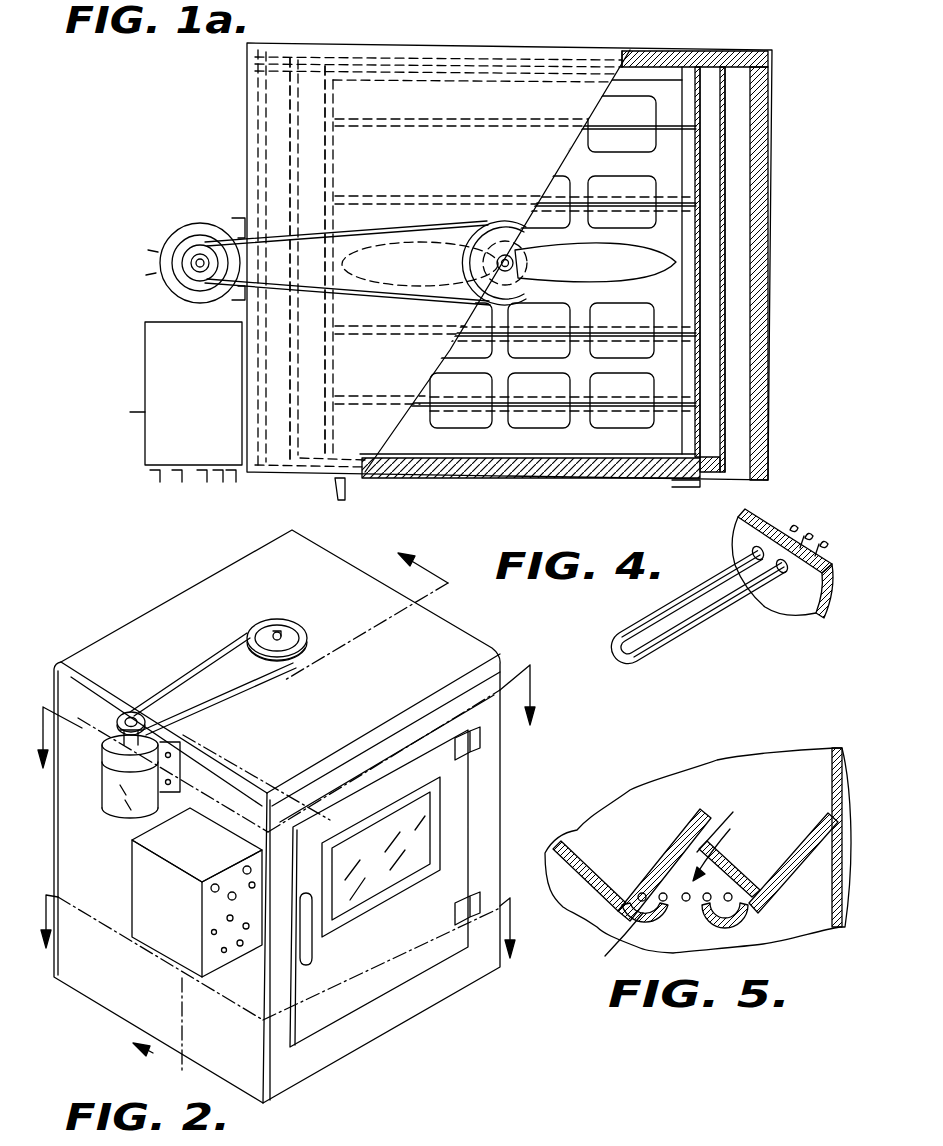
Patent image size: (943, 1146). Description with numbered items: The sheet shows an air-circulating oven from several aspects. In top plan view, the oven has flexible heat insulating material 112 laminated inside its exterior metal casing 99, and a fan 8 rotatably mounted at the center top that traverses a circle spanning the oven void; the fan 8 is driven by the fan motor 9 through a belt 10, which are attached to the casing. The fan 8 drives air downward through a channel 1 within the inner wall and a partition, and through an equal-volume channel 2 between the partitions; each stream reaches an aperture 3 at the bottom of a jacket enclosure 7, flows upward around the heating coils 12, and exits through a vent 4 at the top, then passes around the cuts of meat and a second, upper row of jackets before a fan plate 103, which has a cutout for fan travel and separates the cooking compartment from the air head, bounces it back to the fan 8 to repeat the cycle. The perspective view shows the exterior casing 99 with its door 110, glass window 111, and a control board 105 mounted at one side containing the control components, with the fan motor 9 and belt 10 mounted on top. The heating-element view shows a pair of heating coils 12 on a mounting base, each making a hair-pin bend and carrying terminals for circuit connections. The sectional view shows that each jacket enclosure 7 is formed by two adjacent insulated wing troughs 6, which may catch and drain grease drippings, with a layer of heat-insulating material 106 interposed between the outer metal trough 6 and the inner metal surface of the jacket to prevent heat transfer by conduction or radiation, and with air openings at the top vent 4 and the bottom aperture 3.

In FIG. 1A, the channel 1 is at (285, 75).
In FIG. 1A, the channel 2 is at (312, 78).
In FIG. 2, the aperture 3 is at (282, 934).
In FIG. 5, the aperture 3 is at (682, 913).
In FIG. 5, the vent 4 is at (723, 821).
In FIG. 2, the wing trough 6 is at (292, 729).
In FIG. 5, the wing trough 6 is at (587, 860).
In FIG. 2, the jacket enclosure 7 is at (290, 818).
In FIG. 5, the jacket enclosure 7 is at (721, 849).
In FIG. 1A, the fan 8 is at (665, 250).
In FIG. 1A, the motor 9 is at (178, 232).
In FIG. 2, the motor 9 is at (100, 780).
In FIG. 1A, the drive belt 10 is at (212, 238).
In FIG. 2, the drive belt 10 is at (196, 680).
In FIG. 4, the heating coils 12 is at (694, 575).
In FIG. 5, the heating coils 12 is at (750, 853).
In FIG. 2, the exterior metal casing 99 is at (460, 640).
In FIG. 1A, the fan plate 103 is at (675, 345).
In FIG. 1A, the control board 105 is at (145, 400).
In FIG. 2, the control board 105 is at (232, 960).
In FIG. 5, the heat-insulating material 106 is at (565, 840).
In FIG. 2, the door 110 is at (427, 965).
In FIG. 2, the glass window 111 is at (435, 830).
In FIG. 1A, the flexible heat insulating material 112 is at (262, 97).